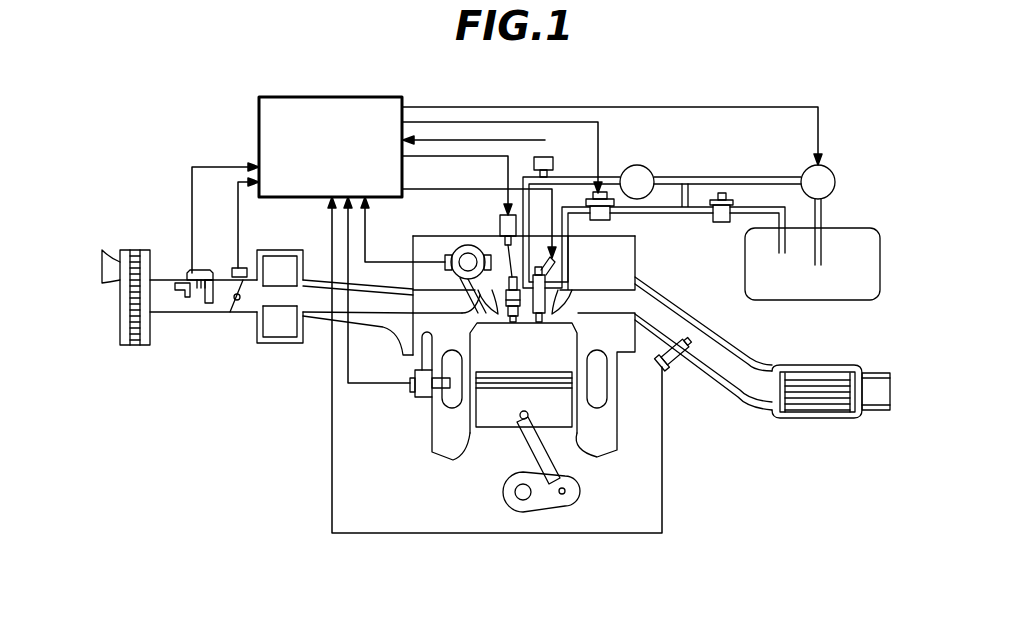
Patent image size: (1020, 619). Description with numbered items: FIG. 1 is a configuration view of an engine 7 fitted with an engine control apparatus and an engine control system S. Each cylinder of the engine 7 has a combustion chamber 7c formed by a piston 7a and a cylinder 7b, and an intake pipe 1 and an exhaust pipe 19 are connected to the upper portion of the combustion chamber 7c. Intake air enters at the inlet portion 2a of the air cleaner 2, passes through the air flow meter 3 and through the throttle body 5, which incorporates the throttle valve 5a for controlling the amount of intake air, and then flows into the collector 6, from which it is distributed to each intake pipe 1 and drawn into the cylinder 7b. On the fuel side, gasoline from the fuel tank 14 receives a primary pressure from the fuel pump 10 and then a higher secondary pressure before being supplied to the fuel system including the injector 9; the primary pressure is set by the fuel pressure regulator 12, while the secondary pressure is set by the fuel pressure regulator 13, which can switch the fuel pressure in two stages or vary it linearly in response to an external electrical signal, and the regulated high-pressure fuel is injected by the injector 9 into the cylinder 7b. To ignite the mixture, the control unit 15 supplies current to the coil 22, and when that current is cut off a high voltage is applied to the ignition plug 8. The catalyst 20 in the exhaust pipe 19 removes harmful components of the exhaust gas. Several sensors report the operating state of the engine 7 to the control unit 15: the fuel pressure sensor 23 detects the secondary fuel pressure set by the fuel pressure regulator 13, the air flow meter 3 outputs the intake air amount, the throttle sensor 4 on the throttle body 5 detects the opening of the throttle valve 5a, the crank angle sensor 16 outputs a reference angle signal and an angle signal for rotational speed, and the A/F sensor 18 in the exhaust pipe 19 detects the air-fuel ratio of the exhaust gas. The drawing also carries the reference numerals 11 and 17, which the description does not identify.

The engine control system S is at (683, 102).
The intake pipe 1 is at (317, 318).
The air cleaner 2 is at (135, 250).
The inlet portion 2a is at (108, 283).
The air flow meter 3 is at (190, 272).
The throttle sensor 4 is at (237, 268).
The throttle body 5 is at (212, 313).
The throttle valve 5a is at (243, 313).
The collector 6 is at (285, 335).
The engine 7 is at (613, 265).
The piston 7a is at (500, 420).
The cylinder 7b is at (598, 440).
The combustion chamber 7c is at (565, 360).
The ignition plug 8 is at (538, 322).
The injector 9 is at (508, 322).
The fuel pump 10 is at (836, 178).
The high pressure fuel pump 11 is at (650, 168).
The fuel pressure regulator 12 is at (722, 222).
The fuel pressure regulator 13 is at (610, 222).
The fuel tank 14 is at (821, 302).
The control unit 15 is at (259, 110).
The crank angle sensor 16 is at (452, 250).
The knock sensor 17 is at (410, 388).
The A/F sensor 18 is at (670, 366).
The exhaust pipe 19 is at (742, 410).
The catalyst 20 is at (812, 413).
The coil 22 is at (500, 228).
The fuel pressure sensor 23 is at (553, 163).